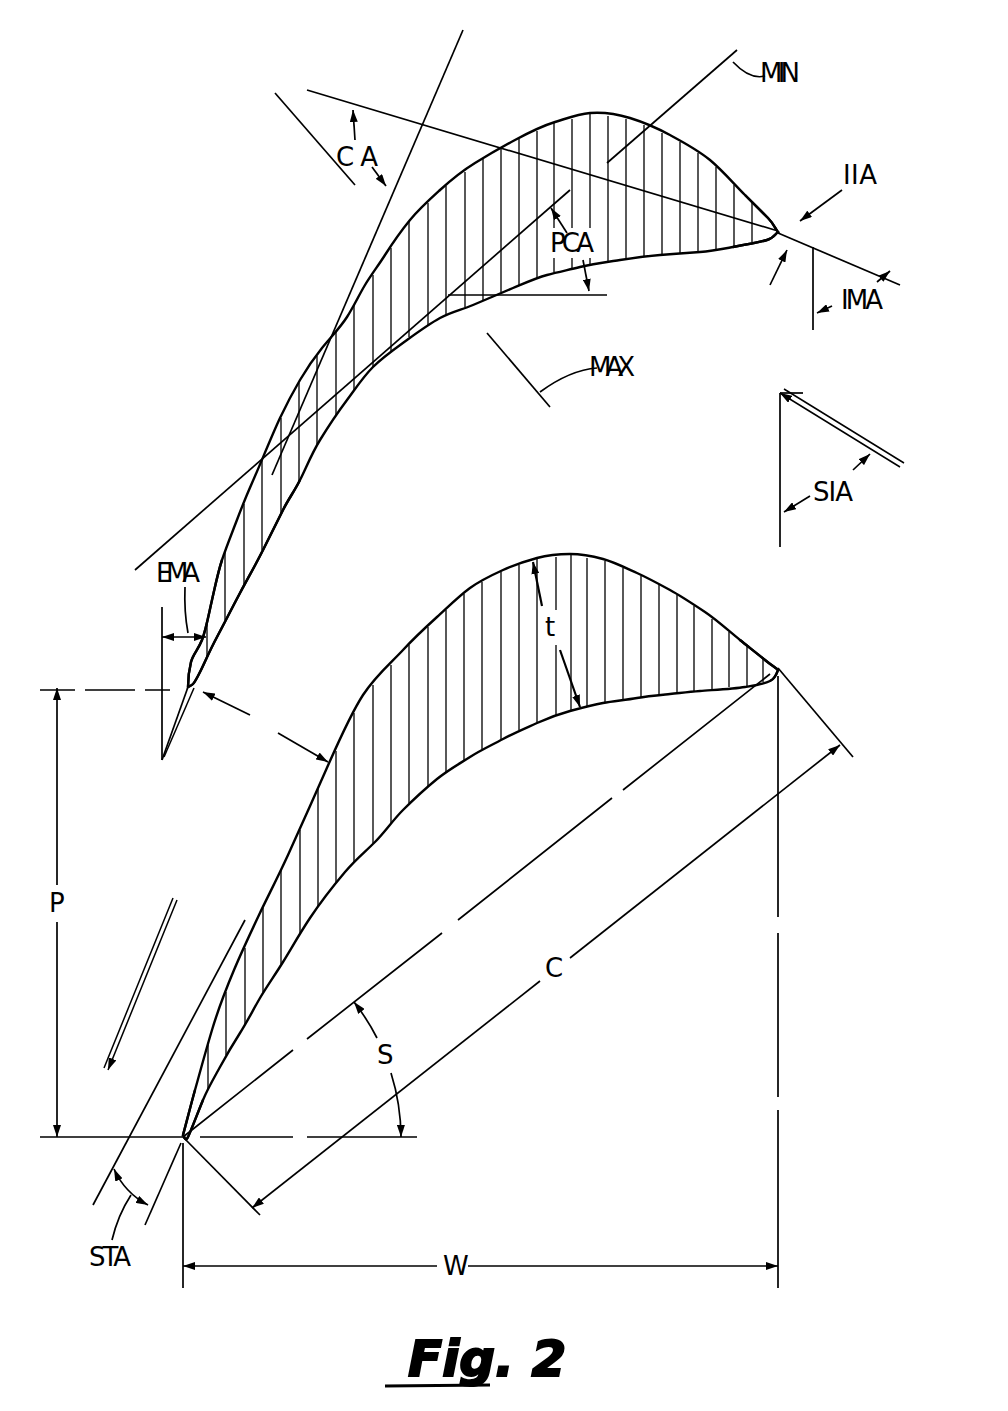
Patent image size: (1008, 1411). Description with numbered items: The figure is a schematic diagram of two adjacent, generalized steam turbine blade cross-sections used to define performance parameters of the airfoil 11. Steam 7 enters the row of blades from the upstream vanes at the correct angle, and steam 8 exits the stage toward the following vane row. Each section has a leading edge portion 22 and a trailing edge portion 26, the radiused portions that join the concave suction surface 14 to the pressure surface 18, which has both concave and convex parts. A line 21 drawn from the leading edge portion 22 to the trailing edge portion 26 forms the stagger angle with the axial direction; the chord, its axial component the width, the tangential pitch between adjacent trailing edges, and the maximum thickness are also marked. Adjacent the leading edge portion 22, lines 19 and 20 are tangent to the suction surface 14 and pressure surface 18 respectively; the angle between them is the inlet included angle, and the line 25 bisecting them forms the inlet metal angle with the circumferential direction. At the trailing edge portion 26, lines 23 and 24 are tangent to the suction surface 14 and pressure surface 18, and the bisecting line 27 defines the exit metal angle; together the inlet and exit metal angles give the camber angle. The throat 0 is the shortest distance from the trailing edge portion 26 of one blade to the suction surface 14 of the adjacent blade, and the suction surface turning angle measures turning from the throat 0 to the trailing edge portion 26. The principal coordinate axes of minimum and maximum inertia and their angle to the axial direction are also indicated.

The steam entering the row of blades 7 is at (863, 441).
The steam exiting the stage 8 is at (140, 987).
The airfoil 11 is at (380, 674).
The suction surface 14 is at (466, 590).
The pressure surface 18 is at (478, 762).
The tangent line to suction surface at leading edge 19 is at (793, 220).
The tangent line to pressure surface at leading edge 20 is at (770, 248).
The stagger line 21 is at (444, 932).
The leading edge portion 22 is at (781, 664).
The tangent line to suction surface at trailing edge 23 is at (180, 693).
The tangent line to pressure surface at trailing edge 24 is at (178, 727).
The inlet bisecting line 25 is at (874, 268).
The trailing edge portion 26 is at (186, 1145).
The exit bisecting line 27 is at (262, 578).
The throat 0 is at (263, 722).